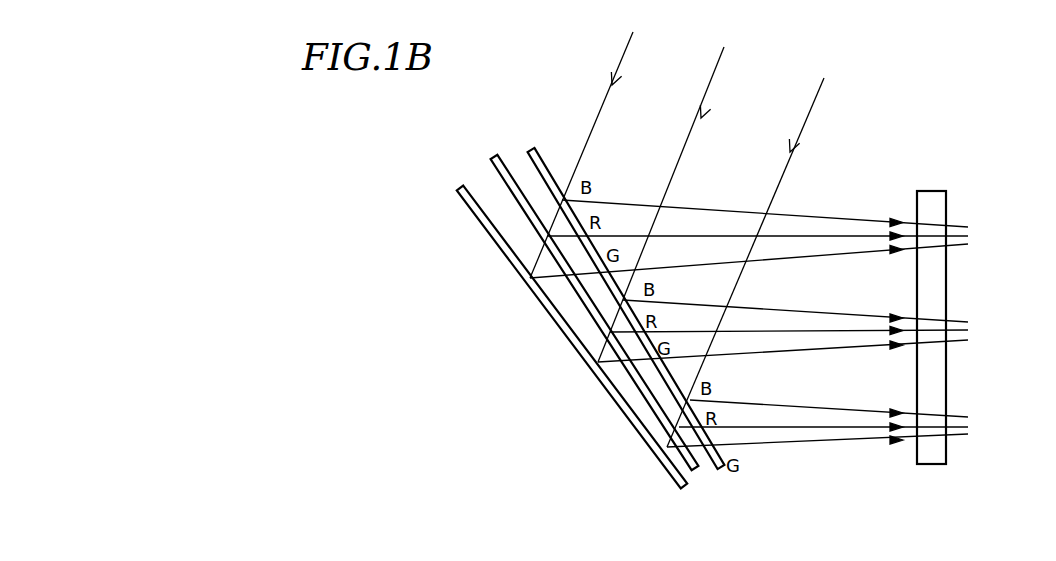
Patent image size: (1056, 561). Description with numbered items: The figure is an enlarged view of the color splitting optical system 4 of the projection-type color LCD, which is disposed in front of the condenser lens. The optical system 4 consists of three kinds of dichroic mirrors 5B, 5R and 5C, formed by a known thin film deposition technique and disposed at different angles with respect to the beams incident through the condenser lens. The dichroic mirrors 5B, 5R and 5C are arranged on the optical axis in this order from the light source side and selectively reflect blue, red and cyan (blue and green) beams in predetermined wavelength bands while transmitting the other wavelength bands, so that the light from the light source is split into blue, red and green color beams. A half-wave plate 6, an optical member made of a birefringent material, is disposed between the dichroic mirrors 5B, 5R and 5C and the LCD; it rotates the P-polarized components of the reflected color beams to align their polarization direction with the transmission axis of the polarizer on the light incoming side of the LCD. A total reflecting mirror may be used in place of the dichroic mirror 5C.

The color splitting optical system 4 is at (985, 105).
The dichroic mirror for reflecting blue beam 5B is at (531, 147).
The dichroic mirror for reflecting red beam 5R is at (494, 153).
The dichroic mirror for reflecting cyan beam 5C is at (460, 185).
The half-wave plate 6 is at (937, 190).